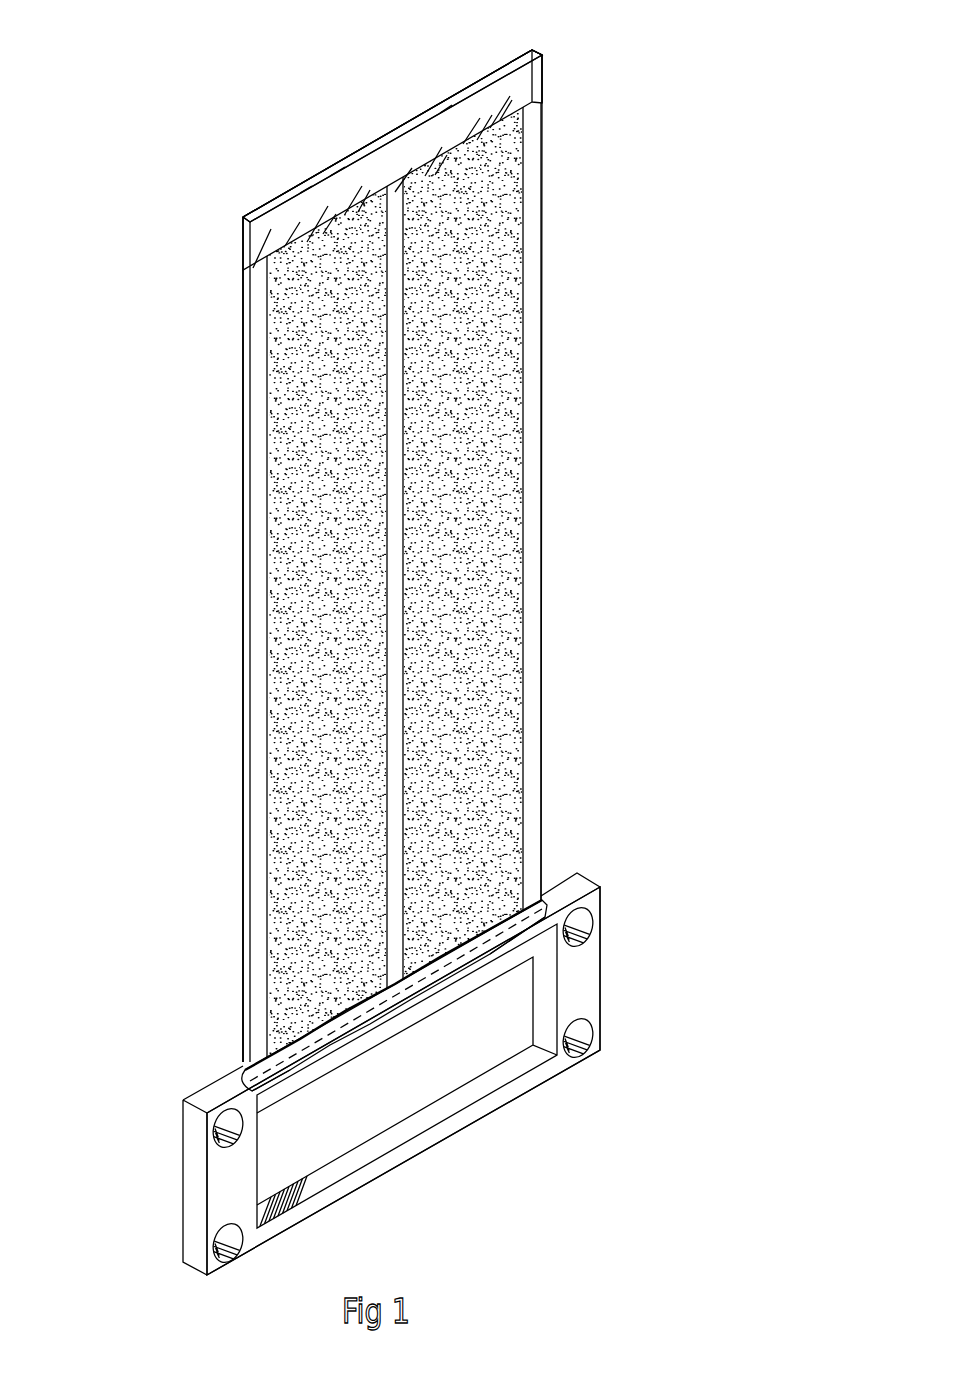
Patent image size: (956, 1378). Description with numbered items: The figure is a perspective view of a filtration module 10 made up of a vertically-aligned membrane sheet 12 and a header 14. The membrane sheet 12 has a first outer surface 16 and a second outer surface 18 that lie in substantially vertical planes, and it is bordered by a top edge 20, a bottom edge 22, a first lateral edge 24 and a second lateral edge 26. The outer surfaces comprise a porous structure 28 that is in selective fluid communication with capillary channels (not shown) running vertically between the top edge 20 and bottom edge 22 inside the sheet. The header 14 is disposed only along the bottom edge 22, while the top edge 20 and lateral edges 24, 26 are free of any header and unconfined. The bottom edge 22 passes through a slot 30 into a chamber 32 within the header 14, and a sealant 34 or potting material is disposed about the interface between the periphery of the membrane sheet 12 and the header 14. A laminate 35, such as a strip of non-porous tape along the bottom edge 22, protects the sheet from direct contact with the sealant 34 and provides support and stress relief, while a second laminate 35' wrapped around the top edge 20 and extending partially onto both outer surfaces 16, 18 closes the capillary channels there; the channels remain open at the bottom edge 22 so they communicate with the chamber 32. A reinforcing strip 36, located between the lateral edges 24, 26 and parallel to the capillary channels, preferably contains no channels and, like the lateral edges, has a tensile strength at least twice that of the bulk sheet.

The filtration module 10 is at (125, 517).
The membrane sheet 12 is at (295, 862).
The header 14 is at (183, 1168).
The first outer surface 16 is at (520, 157).
The second outer surface 18 is at (438, 94).
The top edge 20 is at (268, 203).
The bottom edge 22 is at (400, 1043).
The first lateral edge 24 is at (250, 705).
The second lateral edge 26 is at (540, 623).
The porous structure 28 is at (495, 752).
The slot 30 is at (545, 905).
The chamber 32 is at (508, 1038).
The sealant 34 is at (255, 1075).
The laminate 35 is at (211, 1028).
The laminate 35' is at (185, 666).
The reinforcing strip 36 is at (398, 615).